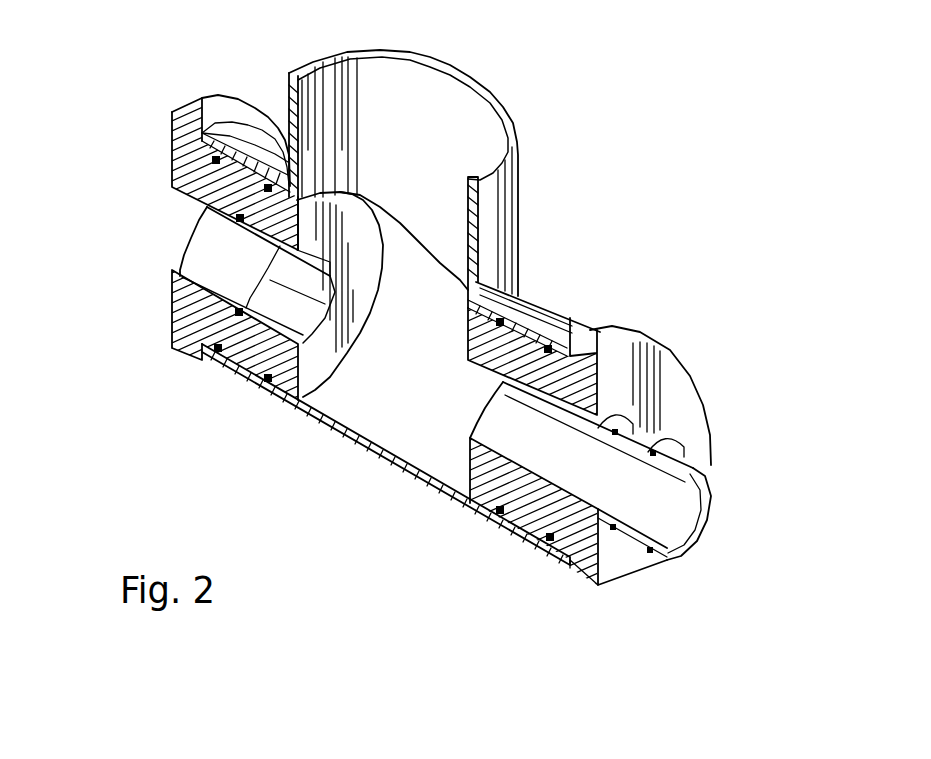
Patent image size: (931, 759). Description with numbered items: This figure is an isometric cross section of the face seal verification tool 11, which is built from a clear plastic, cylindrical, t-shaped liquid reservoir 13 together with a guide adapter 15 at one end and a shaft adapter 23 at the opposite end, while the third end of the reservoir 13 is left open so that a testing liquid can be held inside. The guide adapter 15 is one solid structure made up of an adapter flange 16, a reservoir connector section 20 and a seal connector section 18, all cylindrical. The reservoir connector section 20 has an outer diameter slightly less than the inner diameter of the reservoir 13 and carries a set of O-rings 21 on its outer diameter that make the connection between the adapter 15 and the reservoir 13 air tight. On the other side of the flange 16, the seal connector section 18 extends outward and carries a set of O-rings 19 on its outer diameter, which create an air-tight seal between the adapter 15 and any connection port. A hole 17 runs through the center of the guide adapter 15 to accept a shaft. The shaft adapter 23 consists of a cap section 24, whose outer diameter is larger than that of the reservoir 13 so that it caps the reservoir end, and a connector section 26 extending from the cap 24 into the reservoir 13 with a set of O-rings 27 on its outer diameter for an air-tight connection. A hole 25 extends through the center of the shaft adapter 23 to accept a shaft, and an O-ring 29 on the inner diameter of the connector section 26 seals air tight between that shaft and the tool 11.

The face seal verification tool 11 is at (552, 145).
The liquid reservoir 13 is at (490, 203).
The guide adapter 15 is at (740, 416).
The adapter flange 16 is at (598, 343).
The hole 17 is at (660, 522).
The seal connector section 18 is at (698, 432).
The O-rings 19 is at (680, 444).
The reservoir connector section 20 is at (487, 487).
The O-rings 21 is at (548, 541).
The shaft adapter 23 is at (115, 178).
The cap section 24 is at (177, 133).
The hole 25 is at (203, 263).
The connector section 26 is at (290, 388).
The O-rings 27 is at (268, 380).
The O-ring 29 is at (205, 269).